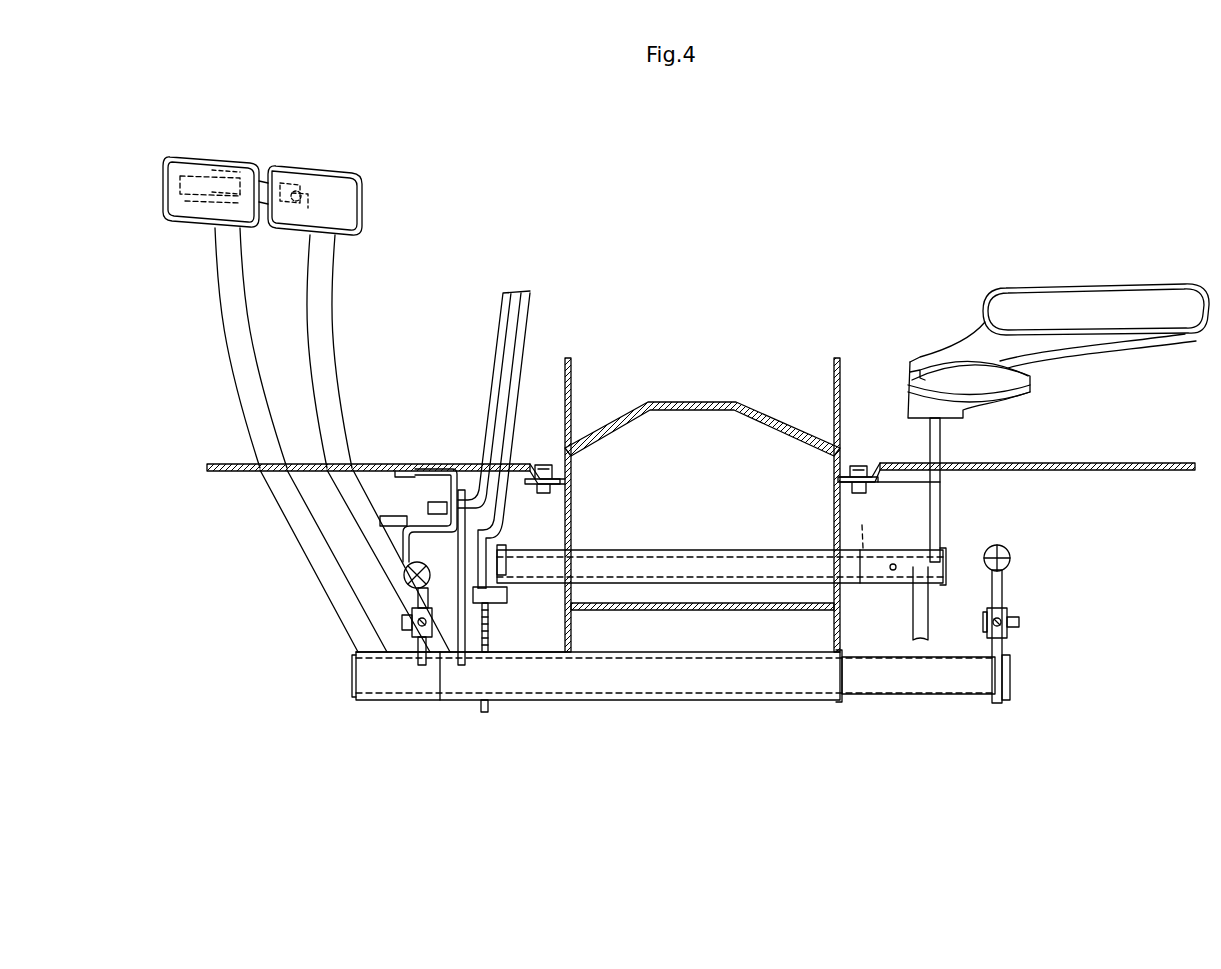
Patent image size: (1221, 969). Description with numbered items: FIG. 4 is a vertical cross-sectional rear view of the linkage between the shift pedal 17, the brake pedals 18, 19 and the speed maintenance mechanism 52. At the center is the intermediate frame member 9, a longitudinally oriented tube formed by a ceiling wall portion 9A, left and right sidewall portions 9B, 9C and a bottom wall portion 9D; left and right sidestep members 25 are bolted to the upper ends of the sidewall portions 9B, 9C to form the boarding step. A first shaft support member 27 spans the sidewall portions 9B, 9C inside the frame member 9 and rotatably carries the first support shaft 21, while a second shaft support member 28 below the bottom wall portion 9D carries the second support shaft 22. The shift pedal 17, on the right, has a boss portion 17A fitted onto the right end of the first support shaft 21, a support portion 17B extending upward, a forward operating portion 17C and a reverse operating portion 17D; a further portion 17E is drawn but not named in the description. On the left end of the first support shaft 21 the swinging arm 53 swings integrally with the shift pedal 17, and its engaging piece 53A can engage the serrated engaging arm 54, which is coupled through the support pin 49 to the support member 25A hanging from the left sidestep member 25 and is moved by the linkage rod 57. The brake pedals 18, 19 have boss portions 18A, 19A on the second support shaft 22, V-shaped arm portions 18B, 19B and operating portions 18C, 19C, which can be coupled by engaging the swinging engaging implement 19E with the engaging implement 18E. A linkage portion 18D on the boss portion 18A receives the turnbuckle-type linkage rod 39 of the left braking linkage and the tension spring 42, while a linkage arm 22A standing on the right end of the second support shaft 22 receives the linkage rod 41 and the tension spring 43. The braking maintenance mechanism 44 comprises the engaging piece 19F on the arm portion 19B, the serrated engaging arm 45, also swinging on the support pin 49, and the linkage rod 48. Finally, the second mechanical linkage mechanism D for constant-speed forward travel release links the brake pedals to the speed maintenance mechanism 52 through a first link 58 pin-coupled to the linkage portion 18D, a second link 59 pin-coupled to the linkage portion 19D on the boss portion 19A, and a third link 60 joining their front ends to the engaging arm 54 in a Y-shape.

The brake pedal for left braking 18 is at (242, 377).
The engaging implement 18E is at (215, 160).
The swinging engaging implement 19E is at (292, 170).
The brake pedal for right braking 19 is at (354, 380).
The operating portion 18C is at (178, 187).
The operating portion 19C is at (352, 202).
The arm portion 18B is at (220, 343).
The arm portion 19B is at (328, 333).
The linkage rod 48 is at (498, 357).
The linkage rod 57 is at (525, 334).
The ceiling wall portion 9A is at (645, 408).
The intermediate frame member 9 is at (702, 486).
The sidewall portion 9B is at (573, 505).
The sidewall portion 9C is at (830, 503).
The bottom wall portion 9D is at (685, 612).
The first shaft support member 27 is at (699, 548).
The first support shaft 21 is at (861, 525).
The boss portion 17A is at (905, 550).
The shift pedal 17 is at (1032, 438).
The forward operating portion 17C is at (1092, 302).
The reverse operating portion 17D is at (955, 360).
The support portion 17B is at (944, 452).
The lever lower portion 17E is at (915, 592).
The sidestep member 25 is at (208, 462).
The support member 25A is at (432, 468).
The engaging piece 19F is at (380, 466).
The support pin 49 is at (415, 470).
The third link 60 is at (428, 510).
The braking maintenance mechanism 44 is at (366, 530).
The engaging arm 45 is at (405, 546).
The tension spring 42 is at (405, 576).
The second mechanical linkage mechanism D is at (412, 594).
The first link 58 is at (410, 598).
The linkage rod 39 is at (420, 632).
The boss portion 18A is at (368, 690).
The linkage portion 18D is at (421, 668).
The second link 59 is at (455, 668).
The linkage portion 19D is at (464, 668).
The boss portion 19A is at (540, 684).
The engaging arm 54 is at (478, 542).
The swinging arm 53 is at (504, 549).
The engaging piece 53A is at (490, 600).
The speed maintenance mechanism 52 is at (500, 608).
The second shaft support member 28 is at (712, 682).
The second support shaft 22 is at (908, 682).
The linkage arm 22A is at (1005, 598).
The tension spring 43 is at (1012, 553).
The linkage rod 41 is at (1003, 628).